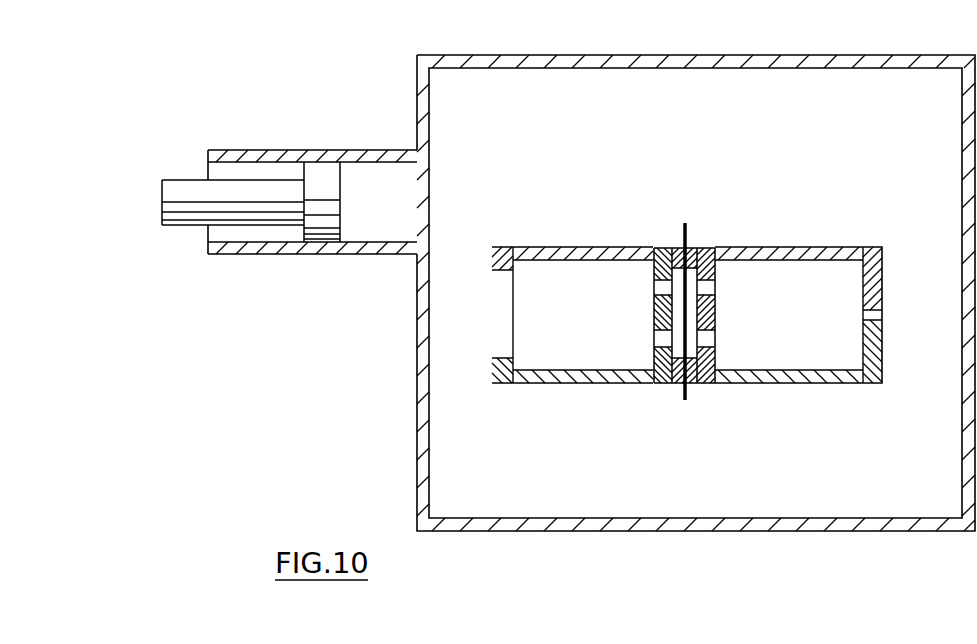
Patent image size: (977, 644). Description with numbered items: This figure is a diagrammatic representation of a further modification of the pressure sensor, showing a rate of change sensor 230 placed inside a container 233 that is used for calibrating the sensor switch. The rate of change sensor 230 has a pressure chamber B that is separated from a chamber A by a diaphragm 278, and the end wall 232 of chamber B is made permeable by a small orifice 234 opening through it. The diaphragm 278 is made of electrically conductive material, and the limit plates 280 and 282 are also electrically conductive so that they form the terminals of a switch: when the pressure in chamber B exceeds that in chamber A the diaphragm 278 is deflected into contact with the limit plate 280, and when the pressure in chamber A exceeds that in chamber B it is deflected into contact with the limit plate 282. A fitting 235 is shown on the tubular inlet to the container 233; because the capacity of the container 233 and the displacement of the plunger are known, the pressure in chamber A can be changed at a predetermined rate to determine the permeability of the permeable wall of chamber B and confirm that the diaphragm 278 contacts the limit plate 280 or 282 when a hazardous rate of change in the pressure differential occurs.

The rate of change sensor 230 is at (719, 291).
The end wall 232 is at (876, 356).
The container 233 is at (635, 63).
The orifice 234 is at (876, 318).
The fitting 235 is at (323, 172).
The diaphragm 278 is at (688, 234).
The limit plate 280 is at (663, 384).
The limit plate 282 is at (711, 384).